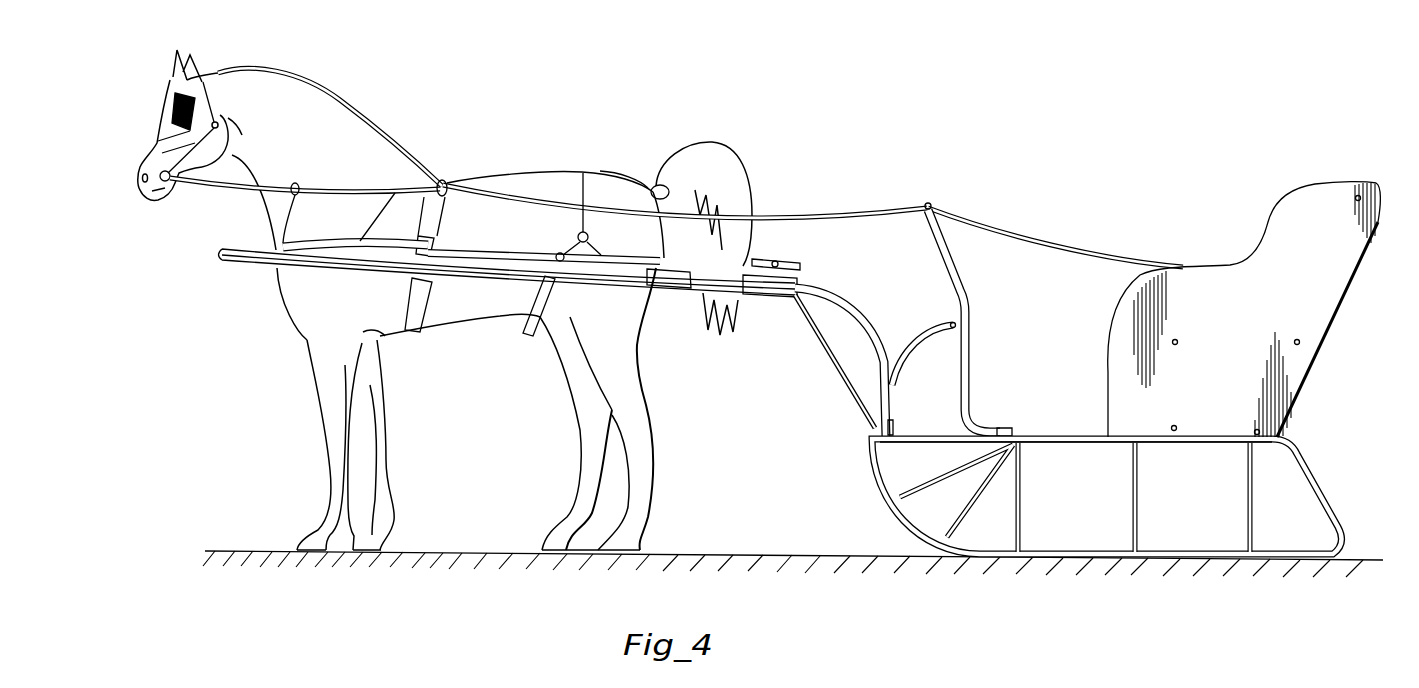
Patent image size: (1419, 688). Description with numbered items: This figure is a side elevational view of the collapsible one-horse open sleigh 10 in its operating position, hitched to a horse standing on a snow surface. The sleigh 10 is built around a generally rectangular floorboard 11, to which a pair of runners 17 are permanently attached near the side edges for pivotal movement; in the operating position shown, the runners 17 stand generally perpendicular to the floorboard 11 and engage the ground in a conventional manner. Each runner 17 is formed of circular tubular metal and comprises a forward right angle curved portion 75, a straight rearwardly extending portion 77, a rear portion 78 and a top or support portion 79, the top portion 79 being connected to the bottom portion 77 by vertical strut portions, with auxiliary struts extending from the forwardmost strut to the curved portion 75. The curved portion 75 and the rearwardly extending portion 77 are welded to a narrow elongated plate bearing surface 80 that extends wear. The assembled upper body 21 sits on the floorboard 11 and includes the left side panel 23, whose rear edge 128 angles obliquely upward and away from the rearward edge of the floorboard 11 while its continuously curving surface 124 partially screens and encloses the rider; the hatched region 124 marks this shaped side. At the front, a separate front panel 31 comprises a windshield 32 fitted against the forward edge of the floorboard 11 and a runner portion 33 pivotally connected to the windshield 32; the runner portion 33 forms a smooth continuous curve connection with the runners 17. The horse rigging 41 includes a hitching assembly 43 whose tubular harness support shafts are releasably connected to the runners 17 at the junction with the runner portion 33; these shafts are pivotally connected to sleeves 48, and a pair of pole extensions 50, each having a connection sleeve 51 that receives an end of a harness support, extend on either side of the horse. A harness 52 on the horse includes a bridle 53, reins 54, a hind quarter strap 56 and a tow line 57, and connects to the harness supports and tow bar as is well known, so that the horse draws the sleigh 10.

The one-horse open sleigh 10 is at (1045, 176).
The floorboard 11 is at (1050, 430).
The runners 17 is at (1098, 478).
The upper body 21 is at (1217, 285).
The left side panel 23 is at (1320, 308).
The front panel 31 is at (950, 319).
The windshield 32 is at (967, 357).
The runner portion 33 is at (917, 337).
The horse rigging 41 is at (593, 277).
The hitching assembly 43 is at (867, 307).
The sleeves 48 is at (760, 293).
The pole extensions 50 is at (476, 273).
The connection sleeve 51 is at (667, 283).
The harness 52 is at (464, 167).
The bridle 53 is at (164, 136).
The reins 54 is at (838, 217).
The hind quarter strap 56 is at (590, 182).
The tow line 57 is at (300, 243).
The forward right angle curved portion 75 is at (872, 467).
The straight rearwardly extending portion 77 is at (1070, 547).
The rear portion 78 is at (1307, 463).
The top or support portion 79 is at (1185, 447).
The plate bearing surface 80 is at (897, 520).
The seat front portion 124 is at (1110, 310).
The rear edge 128 is at (1307, 380).